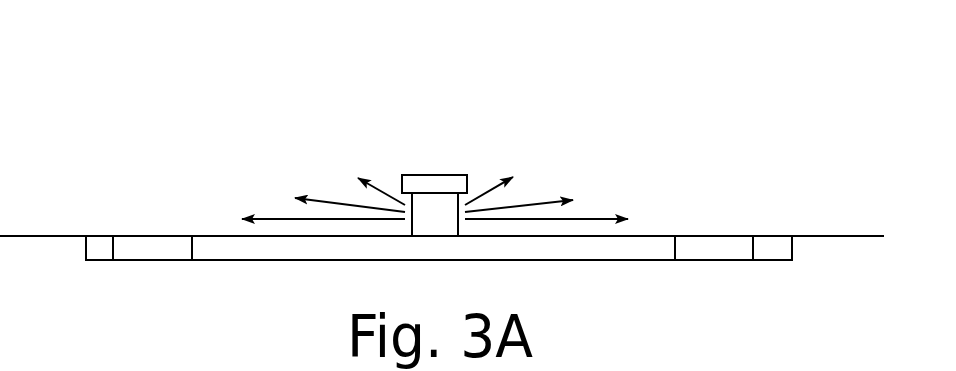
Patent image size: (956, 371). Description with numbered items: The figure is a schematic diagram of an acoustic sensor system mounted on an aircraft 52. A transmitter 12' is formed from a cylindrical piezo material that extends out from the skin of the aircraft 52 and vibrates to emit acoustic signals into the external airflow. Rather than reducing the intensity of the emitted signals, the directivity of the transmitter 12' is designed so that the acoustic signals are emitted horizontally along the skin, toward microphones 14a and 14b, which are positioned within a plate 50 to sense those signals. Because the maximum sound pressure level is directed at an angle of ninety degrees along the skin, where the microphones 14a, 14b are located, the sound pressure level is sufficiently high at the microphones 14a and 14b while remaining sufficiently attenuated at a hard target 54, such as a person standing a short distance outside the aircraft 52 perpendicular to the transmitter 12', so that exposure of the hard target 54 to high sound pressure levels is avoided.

The hard target 54 is at (346, 53).
The transmitter 12' is at (478, 144).
The microphone 14a is at (150, 235).
The microphone 14b is at (712, 235).
The aircraft 52 is at (840, 236).
The plate 50 is at (497, 261).